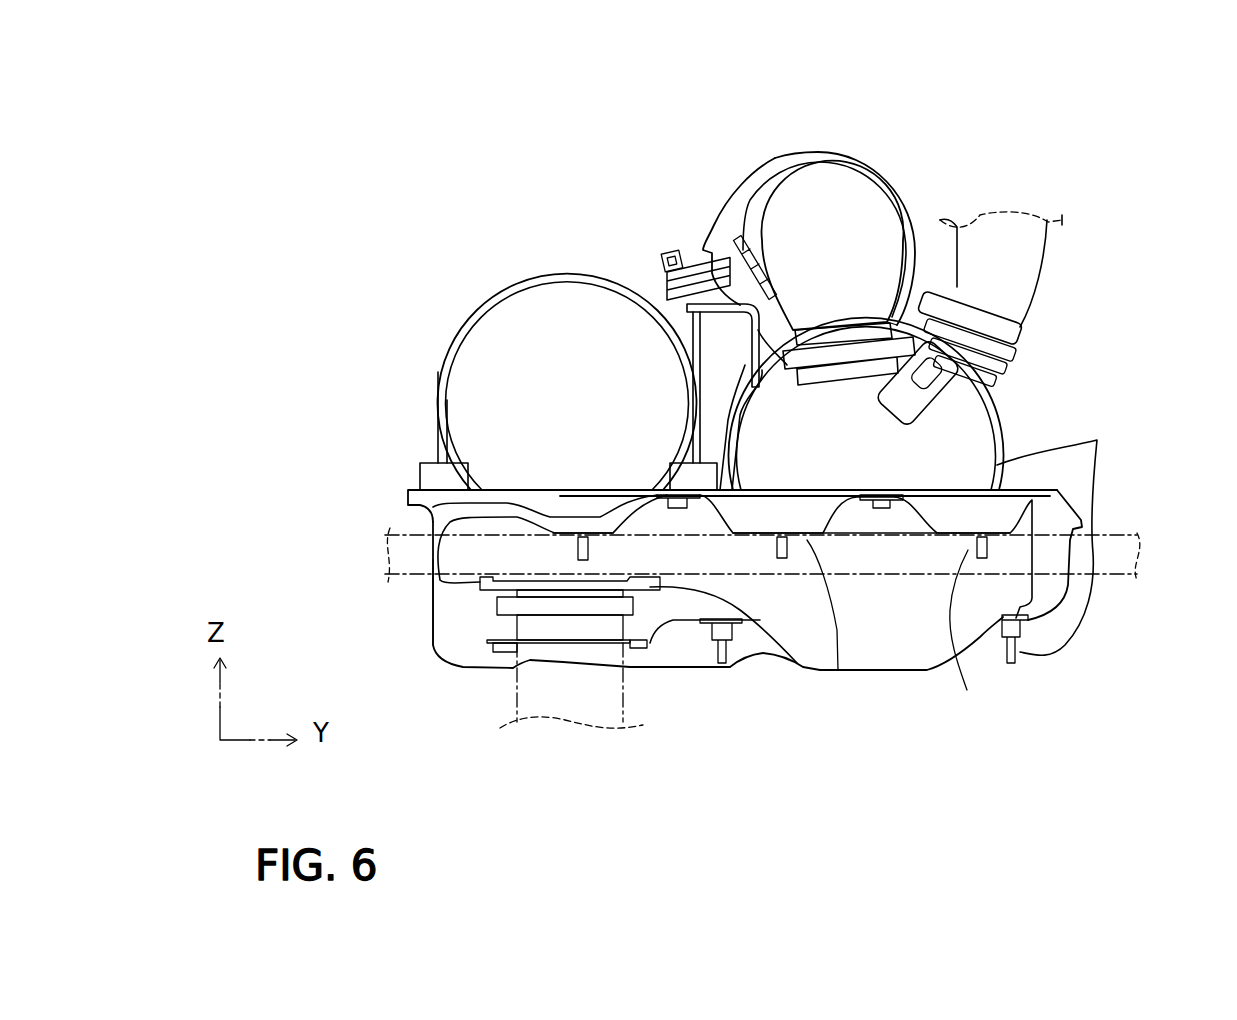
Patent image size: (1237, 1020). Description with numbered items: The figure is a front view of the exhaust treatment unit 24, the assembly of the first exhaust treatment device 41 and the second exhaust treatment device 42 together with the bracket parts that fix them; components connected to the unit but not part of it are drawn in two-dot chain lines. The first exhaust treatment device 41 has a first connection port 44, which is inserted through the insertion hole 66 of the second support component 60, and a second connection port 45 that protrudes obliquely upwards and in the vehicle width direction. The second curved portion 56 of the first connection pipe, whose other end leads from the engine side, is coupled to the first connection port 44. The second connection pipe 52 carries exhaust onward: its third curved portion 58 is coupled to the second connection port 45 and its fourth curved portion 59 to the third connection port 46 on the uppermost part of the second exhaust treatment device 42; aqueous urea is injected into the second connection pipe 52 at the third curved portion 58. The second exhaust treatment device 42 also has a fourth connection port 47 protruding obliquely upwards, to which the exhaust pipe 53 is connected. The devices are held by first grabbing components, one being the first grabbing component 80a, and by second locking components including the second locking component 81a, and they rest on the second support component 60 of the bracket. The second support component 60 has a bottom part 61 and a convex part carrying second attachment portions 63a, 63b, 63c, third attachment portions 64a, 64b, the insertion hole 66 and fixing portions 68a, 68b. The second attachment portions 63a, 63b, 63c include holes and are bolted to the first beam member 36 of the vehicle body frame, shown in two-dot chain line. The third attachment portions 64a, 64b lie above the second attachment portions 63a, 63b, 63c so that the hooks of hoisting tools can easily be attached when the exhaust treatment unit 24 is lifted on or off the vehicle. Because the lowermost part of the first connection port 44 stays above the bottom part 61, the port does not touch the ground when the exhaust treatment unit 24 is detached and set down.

The exhaust treatment unit 24 is at (1060, 763).
The first beam member 36 is at (1127, 531).
The first exhaust treatment device 41 is at (583, 333).
The second exhaust treatment device 42 is at (960, 462).
The first connection port 44 is at (569, 549).
The second connection port 45 is at (667, 302).
The third connection port 46 is at (738, 240).
The fourth connection port 47 is at (922, 290).
The second connection pipe 52 is at (888, 160).
The exhaust pipe 53 is at (985, 212).
The second curved portion 56 is at (548, 718).
The third curved portion 58 is at (724, 240).
The fourth curved portion 59 is at (837, 252).
The second support component 60 is at (413, 526).
The bottom part 61 is at (888, 682).
The second attachment portion 63a is at (465, 600).
The second attachment portion 63b is at (799, 549).
The second attachment portion 63c is at (957, 541).
The third attachment portion 64a is at (680, 508).
The third attachment portion 64b is at (880, 508).
The insertion hole 66 is at (480, 590).
The fixing portion 68a is at (489, 658).
The fixing portion 68b is at (654, 653).
The first grabbing component 80a is at (437, 437).
The second locking component 81a is at (1100, 438).